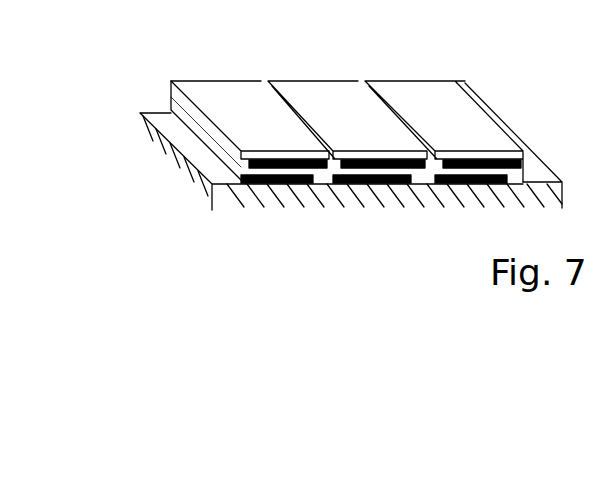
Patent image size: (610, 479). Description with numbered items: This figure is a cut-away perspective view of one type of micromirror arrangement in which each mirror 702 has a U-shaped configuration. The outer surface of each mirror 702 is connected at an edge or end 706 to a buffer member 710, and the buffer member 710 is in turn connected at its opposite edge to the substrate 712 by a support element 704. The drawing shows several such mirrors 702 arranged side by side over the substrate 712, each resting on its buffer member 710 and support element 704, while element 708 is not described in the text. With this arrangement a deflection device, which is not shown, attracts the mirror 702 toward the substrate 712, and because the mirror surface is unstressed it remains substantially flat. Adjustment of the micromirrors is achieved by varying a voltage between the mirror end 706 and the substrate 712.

The mirror 702 is at (217, 86).
The support element 704 is at (334, 164).
The edge or end 706 is at (173, 96).
The substrate 708 is at (164, 128).
The buffer member 710 is at (245, 181).
The substrate 712 is at (395, 191).